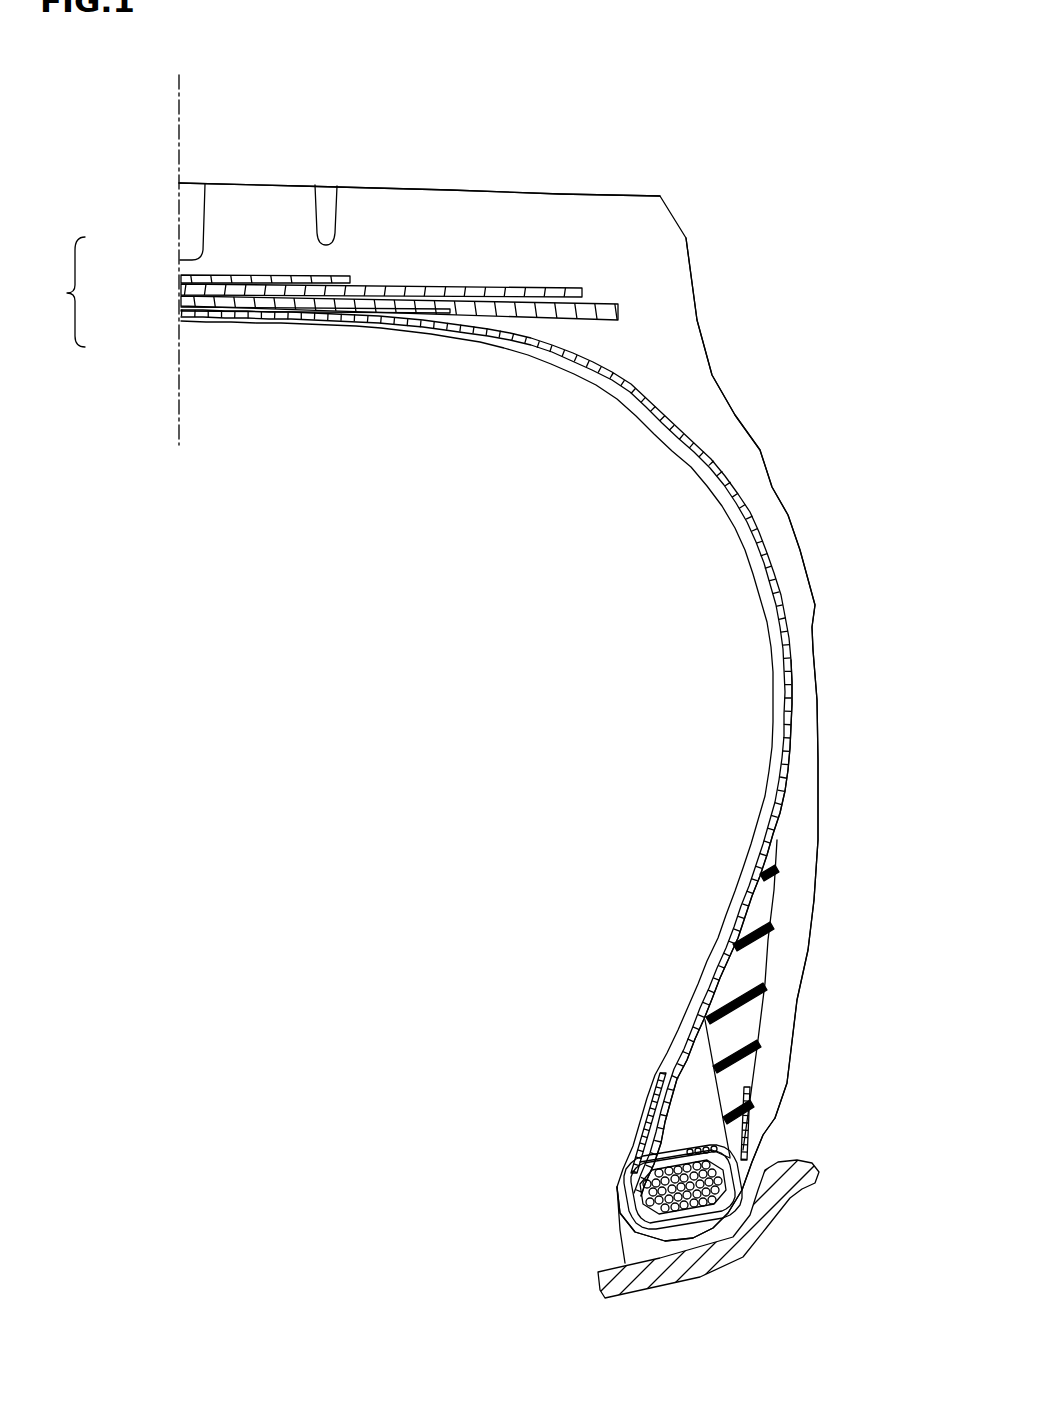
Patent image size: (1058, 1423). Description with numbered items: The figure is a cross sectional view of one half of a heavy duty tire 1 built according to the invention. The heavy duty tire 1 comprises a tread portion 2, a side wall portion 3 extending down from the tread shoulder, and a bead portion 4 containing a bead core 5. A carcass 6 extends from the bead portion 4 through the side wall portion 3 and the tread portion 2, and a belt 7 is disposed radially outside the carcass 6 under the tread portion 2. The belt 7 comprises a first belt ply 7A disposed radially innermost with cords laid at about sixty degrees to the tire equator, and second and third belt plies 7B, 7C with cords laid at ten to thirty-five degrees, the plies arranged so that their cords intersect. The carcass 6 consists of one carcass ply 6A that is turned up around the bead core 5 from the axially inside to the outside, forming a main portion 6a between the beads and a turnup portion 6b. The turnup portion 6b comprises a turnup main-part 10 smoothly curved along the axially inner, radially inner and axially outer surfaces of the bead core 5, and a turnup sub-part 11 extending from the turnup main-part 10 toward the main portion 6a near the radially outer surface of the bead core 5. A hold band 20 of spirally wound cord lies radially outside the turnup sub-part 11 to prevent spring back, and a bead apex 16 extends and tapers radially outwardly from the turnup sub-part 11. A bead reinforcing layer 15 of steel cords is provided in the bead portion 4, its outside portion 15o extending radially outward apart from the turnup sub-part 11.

The heavy duty tire 1 is at (730, 290).
The tread portion 2 is at (463, 217).
The side wall portion 3 is at (830, 565).
The bead portion 4 is at (590, 1185).
The bead core 5 is at (647, 1224).
The carcass 6 is at (486, 753).
The carcass ply 6A is at (782, 665).
The main portion 6a is at (788, 720).
The turnup portion 6b is at (683, 1216).
The belt 7 is at (333, 292).
The first belt ply 7A is at (181, 300).
The second belt ply 7B is at (181, 290).
The third belt ply 7C is at (181, 278).
The turnup main-part 10 is at (687, 1250).
The turnup sub-part 11 is at (650, 1185).
The bead reinforcing layer 15 is at (745, 1124).
The outside portion 15o is at (828, 1123).
The bead apex 16 is at (700, 1057).
The hold band 20 is at (680, 1140).